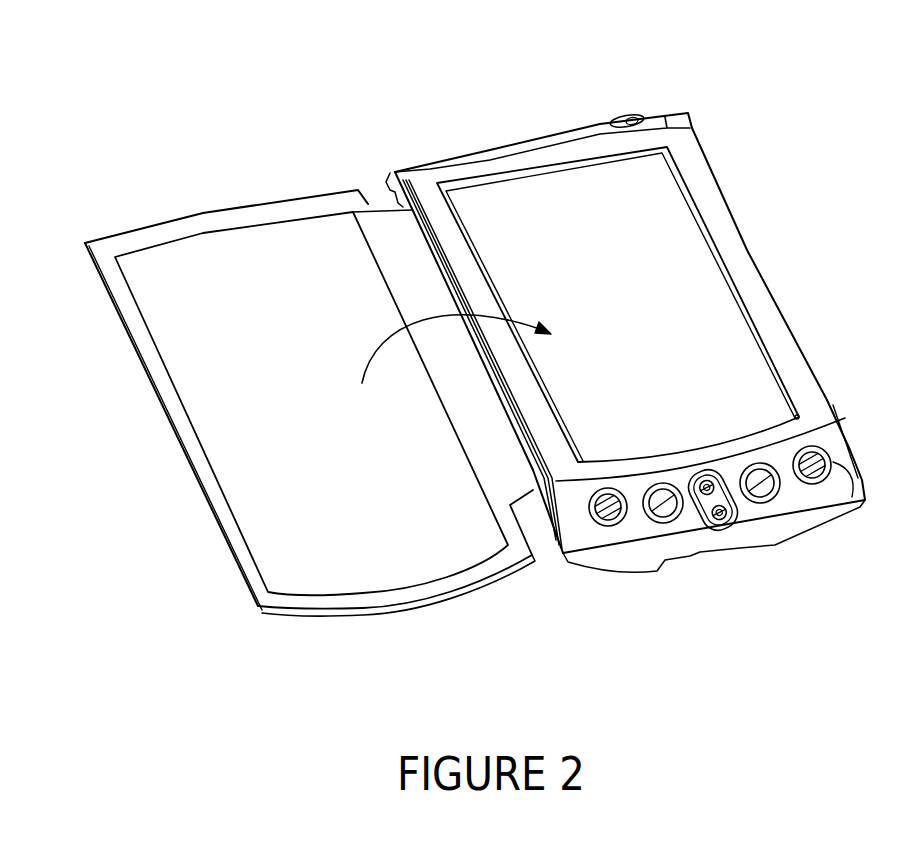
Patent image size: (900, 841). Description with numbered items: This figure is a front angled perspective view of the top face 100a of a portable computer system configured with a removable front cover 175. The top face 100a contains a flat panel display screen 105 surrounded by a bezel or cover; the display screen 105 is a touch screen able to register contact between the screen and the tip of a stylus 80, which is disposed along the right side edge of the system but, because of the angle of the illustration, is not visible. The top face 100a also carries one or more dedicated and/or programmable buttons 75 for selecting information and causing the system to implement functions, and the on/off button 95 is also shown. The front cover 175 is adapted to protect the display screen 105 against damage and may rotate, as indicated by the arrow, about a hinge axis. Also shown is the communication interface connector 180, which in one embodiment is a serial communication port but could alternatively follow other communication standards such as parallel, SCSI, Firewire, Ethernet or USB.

The top face 100a is at (57, 31).
The stylus 80 is at (704, 146).
The on/off button 95 is at (632, 113).
The display screen 105 is at (723, 300).
The buttons 75 is at (618, 523).
The communication interface connector 180 is at (707, 557).
The front cover 175 is at (357, 597).